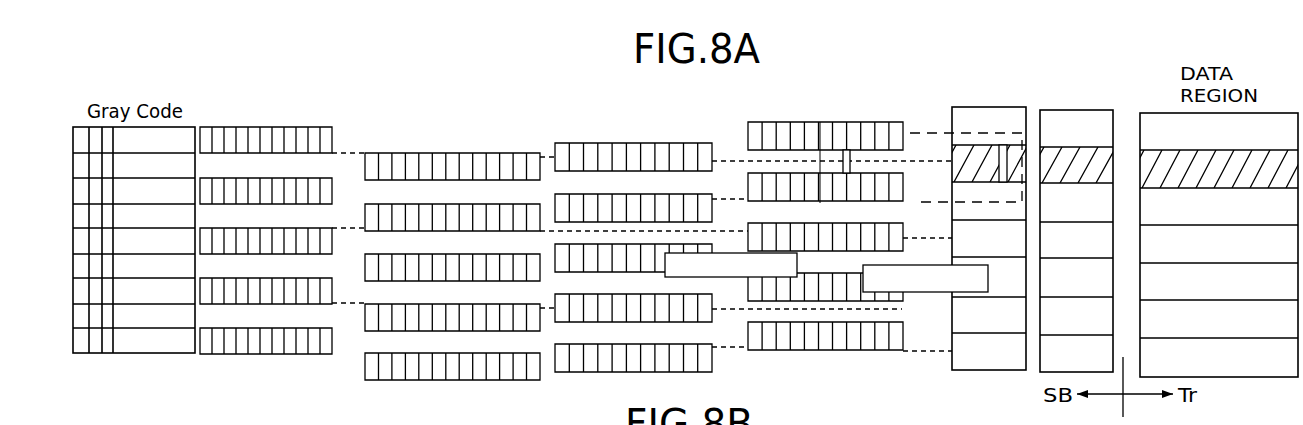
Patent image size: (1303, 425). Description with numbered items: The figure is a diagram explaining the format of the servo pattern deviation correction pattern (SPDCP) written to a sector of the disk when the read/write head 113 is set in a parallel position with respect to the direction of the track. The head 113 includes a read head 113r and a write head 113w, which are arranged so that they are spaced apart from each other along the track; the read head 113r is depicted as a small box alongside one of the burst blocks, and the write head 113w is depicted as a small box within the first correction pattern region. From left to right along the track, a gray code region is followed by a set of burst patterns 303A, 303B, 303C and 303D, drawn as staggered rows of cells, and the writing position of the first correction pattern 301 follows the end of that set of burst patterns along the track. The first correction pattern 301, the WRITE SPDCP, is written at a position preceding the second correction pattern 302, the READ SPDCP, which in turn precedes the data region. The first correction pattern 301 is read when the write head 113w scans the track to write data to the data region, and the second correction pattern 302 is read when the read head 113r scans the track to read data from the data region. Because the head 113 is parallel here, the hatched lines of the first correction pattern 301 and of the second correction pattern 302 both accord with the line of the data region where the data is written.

The burst pattern 303A is at (271, 221).
The burst pattern 303B is at (452, 234).
The burst pattern 303C is at (633, 231).
The burst pattern 303D is at (825, 222).
The read/write head 113 is at (927, 133).
The read head 113r is at (845, 173).
The write head 113w is at (999, 182).
The first correction pattern 301 is at (958, 403).
The second correction pattern 302 is at (1017, 402).